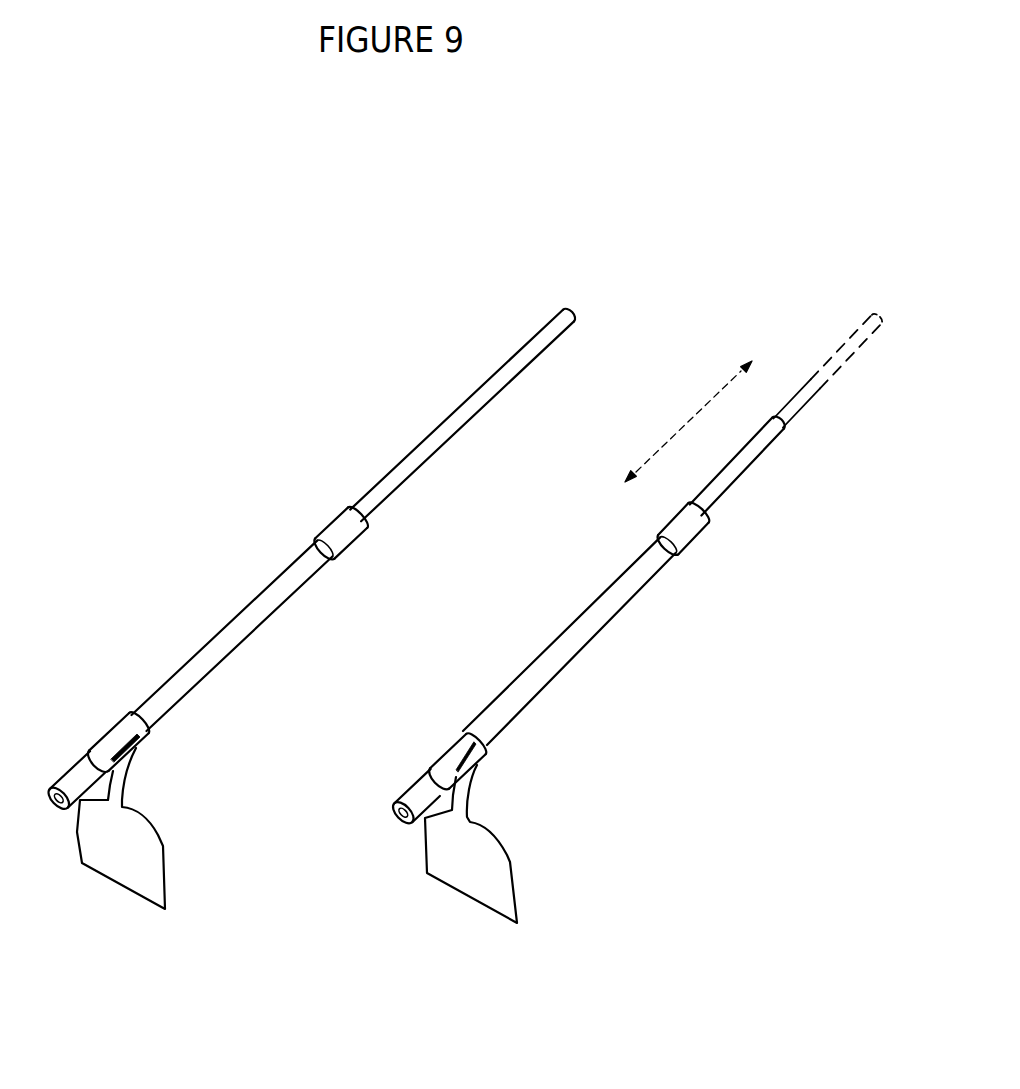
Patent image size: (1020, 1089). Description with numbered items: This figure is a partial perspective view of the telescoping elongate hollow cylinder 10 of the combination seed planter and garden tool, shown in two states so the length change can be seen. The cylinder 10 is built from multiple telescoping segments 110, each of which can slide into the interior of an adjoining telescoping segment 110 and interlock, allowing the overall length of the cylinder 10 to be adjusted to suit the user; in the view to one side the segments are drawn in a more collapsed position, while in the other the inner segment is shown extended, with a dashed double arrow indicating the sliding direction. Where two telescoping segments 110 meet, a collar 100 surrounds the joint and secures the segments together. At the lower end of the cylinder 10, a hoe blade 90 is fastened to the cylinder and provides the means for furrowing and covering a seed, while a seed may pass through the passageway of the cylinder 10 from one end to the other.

The elongate hollow cylinder 10 is at (390, 422).
The hoe blade 90 is at (162, 852).
The collar 100 is at (357, 540).
The telescoping segments 110 is at (393, 495).